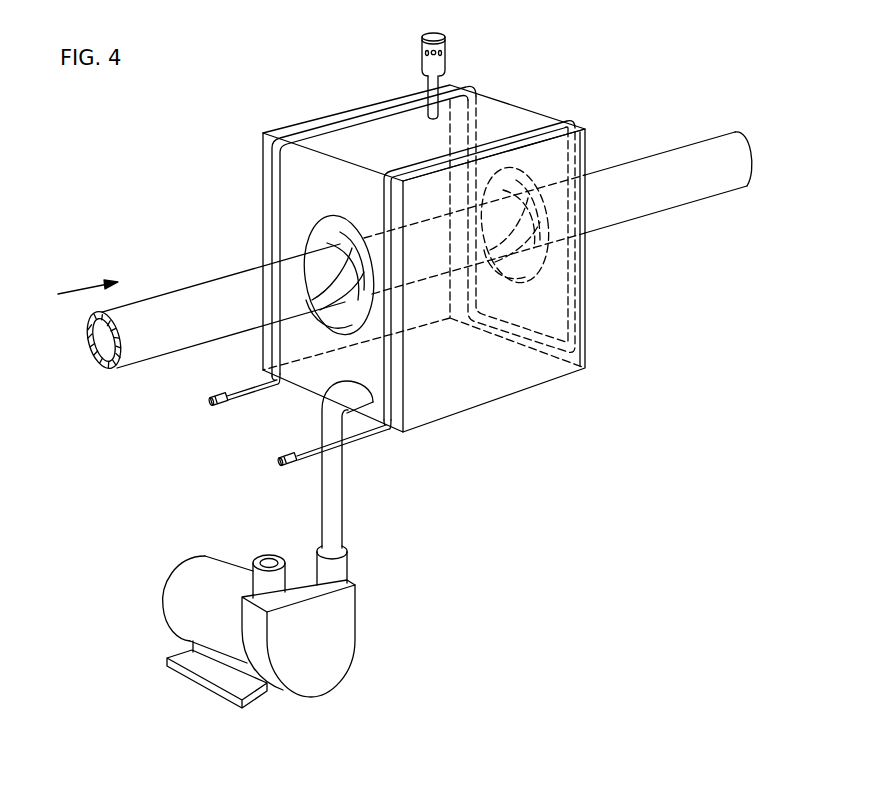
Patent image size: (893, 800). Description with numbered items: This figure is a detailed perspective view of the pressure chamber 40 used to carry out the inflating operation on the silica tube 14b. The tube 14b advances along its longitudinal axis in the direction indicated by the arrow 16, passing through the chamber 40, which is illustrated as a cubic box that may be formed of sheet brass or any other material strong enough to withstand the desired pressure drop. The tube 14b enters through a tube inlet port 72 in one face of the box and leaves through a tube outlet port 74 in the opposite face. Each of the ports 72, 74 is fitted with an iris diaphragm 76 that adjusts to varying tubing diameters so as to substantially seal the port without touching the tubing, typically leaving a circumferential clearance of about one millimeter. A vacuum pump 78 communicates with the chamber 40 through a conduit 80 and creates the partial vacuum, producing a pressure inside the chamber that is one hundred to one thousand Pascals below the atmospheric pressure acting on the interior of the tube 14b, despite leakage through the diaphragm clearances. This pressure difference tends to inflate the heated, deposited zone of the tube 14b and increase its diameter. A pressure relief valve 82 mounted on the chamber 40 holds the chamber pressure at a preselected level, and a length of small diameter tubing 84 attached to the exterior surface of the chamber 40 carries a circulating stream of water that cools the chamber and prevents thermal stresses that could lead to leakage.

The tube 14b is at (210, 282).
The arrow 16 is at (88, 286).
The pressure chamber 40 is at (585, 311).
The tube inlet port 72 is at (314, 229).
The tube outlet port 74 is at (533, 189).
The iris diaphragm 76 is at (349, 229).
The vacuum pump 78 is at (362, 615).
The conduit 80 is at (346, 491).
The pressure relief valve 82 is at (447, 53).
The small diameter tubing 84 is at (250, 393).